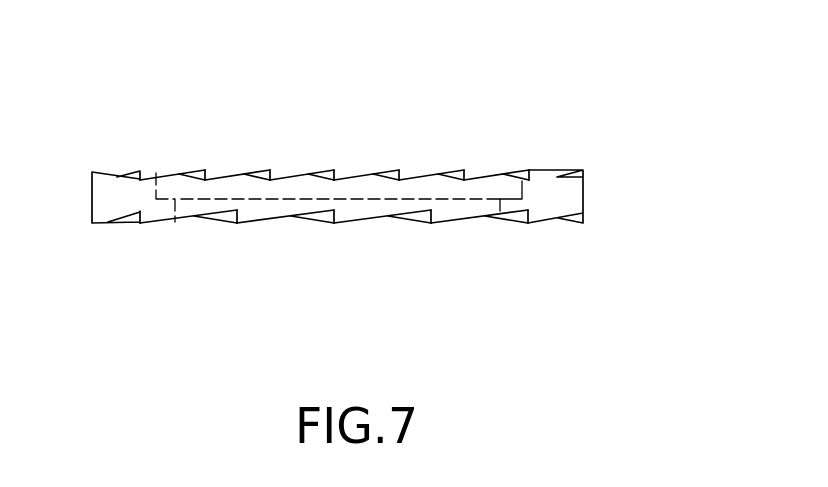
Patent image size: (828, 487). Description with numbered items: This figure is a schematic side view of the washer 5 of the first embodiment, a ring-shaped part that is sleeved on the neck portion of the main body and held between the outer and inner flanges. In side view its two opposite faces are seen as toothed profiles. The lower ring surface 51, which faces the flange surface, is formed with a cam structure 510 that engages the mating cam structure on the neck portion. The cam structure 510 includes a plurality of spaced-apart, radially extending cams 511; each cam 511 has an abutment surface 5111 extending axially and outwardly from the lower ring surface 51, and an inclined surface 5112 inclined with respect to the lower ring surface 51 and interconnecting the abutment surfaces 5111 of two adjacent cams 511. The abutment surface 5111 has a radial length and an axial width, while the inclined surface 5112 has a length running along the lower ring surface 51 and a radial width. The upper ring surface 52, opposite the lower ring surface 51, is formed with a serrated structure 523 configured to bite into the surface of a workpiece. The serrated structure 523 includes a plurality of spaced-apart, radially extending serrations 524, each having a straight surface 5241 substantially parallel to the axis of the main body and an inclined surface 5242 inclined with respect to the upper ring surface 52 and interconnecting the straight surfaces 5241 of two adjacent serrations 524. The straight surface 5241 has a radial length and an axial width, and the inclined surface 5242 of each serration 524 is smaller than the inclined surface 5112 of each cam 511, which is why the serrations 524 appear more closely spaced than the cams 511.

The washer 5 is at (335, 190).
The lower ring surface 51 is at (335, 190).
The cam structure 510 is at (335, 190).
The cam 511 is at (308, 289).
The abutment surface 5111 is at (132, 224).
The inclined surface 5112 is at (197, 217).
The upper ring surface 52 is at (115, 145).
The serrated structure 523 is at (141, 171).
The serration 524 is at (334, 96).
The straight surface 5241 is at (193, 175).
The inclined surface 5242 is at (243, 173).